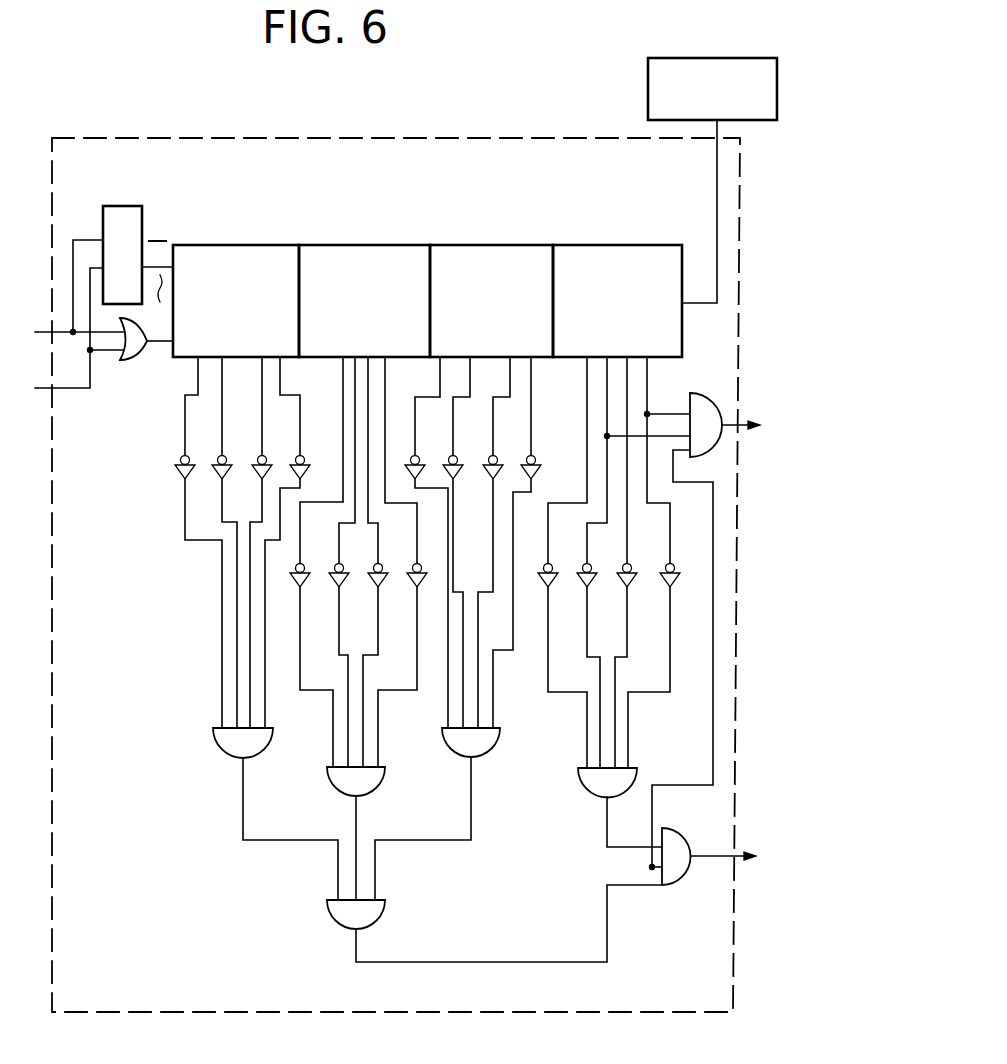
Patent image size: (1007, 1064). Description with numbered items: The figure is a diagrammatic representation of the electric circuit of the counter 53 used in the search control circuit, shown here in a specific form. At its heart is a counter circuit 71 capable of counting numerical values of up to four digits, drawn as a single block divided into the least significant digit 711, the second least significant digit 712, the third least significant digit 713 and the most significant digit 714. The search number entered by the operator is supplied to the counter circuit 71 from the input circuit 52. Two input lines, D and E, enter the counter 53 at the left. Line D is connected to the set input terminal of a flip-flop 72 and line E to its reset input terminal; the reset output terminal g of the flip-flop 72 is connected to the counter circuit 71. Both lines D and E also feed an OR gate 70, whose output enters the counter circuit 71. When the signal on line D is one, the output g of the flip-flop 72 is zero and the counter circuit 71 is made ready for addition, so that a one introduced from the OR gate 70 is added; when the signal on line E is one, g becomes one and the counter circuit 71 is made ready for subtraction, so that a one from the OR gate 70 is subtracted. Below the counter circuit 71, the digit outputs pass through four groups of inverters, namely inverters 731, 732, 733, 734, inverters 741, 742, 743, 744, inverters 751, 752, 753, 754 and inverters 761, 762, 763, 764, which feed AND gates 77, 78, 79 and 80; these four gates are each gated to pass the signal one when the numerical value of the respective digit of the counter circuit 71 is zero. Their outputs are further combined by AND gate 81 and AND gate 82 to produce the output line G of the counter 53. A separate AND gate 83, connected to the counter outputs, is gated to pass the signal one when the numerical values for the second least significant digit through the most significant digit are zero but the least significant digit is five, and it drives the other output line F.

The input circuit 52 is at (648, 90).
The counter 53 is at (740, 221).
The OR gate 70 is at (134, 358).
The counter circuit 71 is at (427, 216).
The flip-flop 72 is at (122, 206).
The least significant digit 711 is at (597, 245).
The second least significant digit 712 is at (480, 245).
The third least significant digit 713 is at (343, 245).
The most significant digit 714 is at (250, 245).
The inverter 731 is at (190, 456).
The inverter 732 is at (227, 456).
The inverter 733 is at (267, 456).
The inverter 734 is at (305, 456).
The inverter 741 is at (298, 590).
The inverter 742 is at (337, 590).
The inverter 743 is at (376, 590).
The inverter 744 is at (415, 590).
The inverter 751 is at (420, 456).
The inverter 752 is at (458, 456).
The inverter 753 is at (498, 456).
The inverter 754 is at (536, 456).
The inverter 761 is at (546, 590).
The inverter 762 is at (585, 590).
The inverter 763 is at (625, 590).
The inverter 764 is at (668, 590).
The AND gate 77 is at (223, 752).
The AND gate 78 is at (334, 788).
The AND gate 79 is at (499, 748).
The AND gate 80 is at (590, 796).
The AND gate 81 is at (331, 918).
The AND gate 82 is at (678, 888).
The AND gate 83 is at (702, 392).